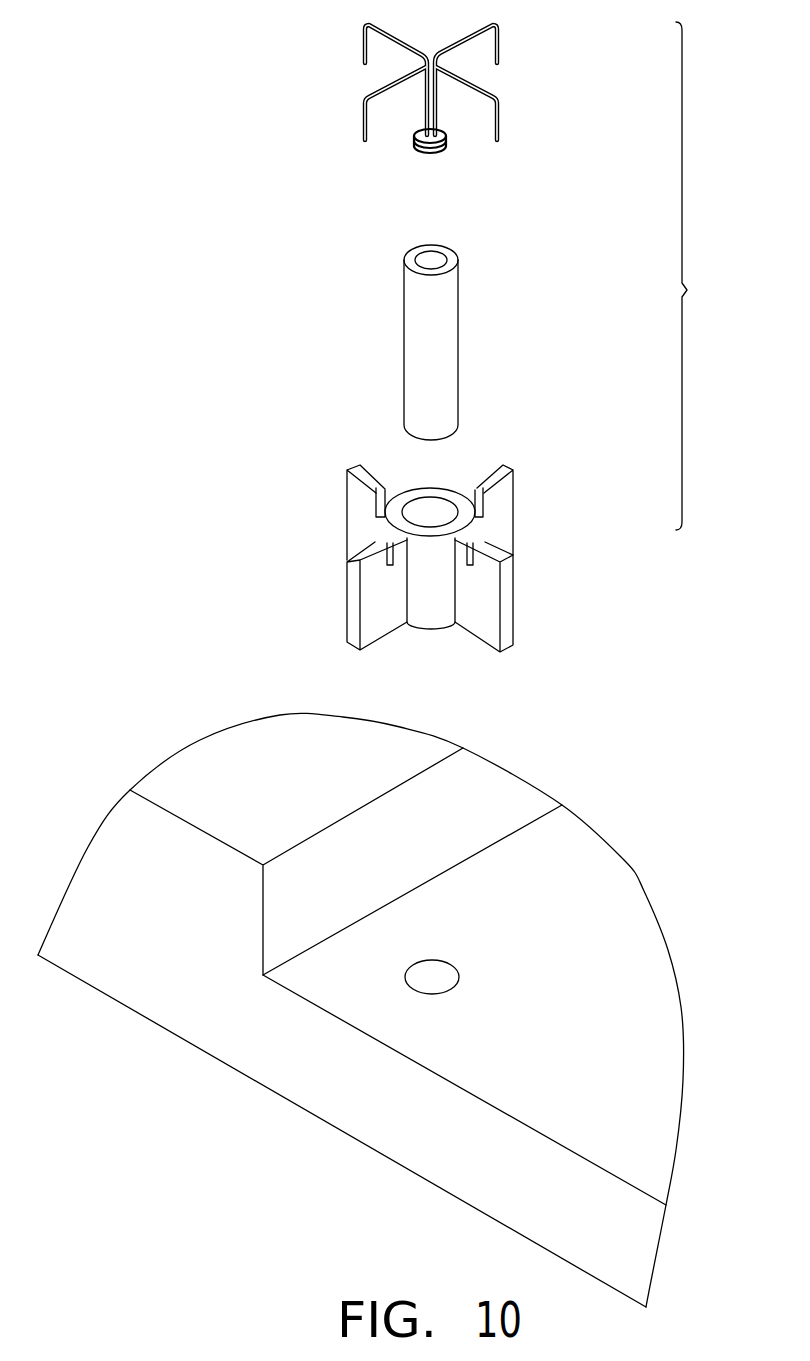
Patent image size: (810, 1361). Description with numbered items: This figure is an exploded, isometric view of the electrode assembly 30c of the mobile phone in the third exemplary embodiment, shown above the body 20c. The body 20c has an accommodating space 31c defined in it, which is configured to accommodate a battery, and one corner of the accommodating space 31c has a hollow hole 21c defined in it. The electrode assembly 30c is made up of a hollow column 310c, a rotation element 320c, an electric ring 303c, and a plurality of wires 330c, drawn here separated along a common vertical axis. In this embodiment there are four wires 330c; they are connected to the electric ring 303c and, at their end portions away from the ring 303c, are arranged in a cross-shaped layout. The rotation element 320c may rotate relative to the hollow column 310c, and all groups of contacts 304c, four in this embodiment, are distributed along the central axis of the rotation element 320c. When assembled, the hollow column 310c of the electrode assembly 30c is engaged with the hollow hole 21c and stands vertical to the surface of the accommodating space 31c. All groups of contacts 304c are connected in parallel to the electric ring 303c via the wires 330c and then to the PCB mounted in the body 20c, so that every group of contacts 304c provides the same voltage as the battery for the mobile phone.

The wires 330c is at (457, 50).
The electric ring 303c is at (445, 147).
The hollow column 310c is at (440, 312).
The groups of contacts 304c is at (494, 477).
The rotation element 320c is at (540, 538).
The electrode assembly 30c is at (709, 276).
The body 20c is at (197, 970).
The accommodating space 31c is at (615, 1032).
The hollow hole 21c is at (432, 977).